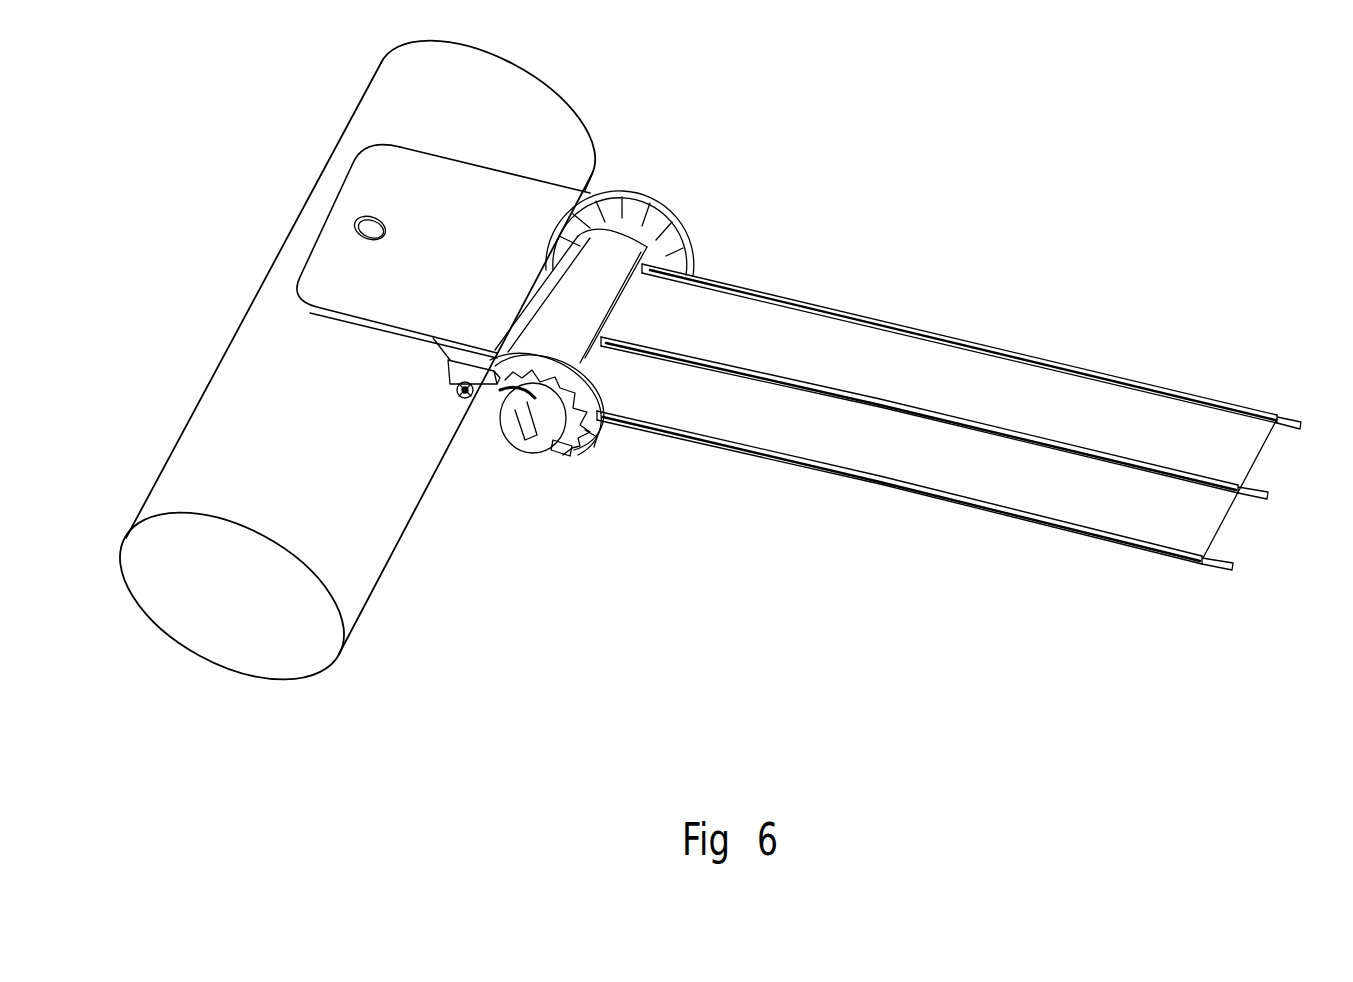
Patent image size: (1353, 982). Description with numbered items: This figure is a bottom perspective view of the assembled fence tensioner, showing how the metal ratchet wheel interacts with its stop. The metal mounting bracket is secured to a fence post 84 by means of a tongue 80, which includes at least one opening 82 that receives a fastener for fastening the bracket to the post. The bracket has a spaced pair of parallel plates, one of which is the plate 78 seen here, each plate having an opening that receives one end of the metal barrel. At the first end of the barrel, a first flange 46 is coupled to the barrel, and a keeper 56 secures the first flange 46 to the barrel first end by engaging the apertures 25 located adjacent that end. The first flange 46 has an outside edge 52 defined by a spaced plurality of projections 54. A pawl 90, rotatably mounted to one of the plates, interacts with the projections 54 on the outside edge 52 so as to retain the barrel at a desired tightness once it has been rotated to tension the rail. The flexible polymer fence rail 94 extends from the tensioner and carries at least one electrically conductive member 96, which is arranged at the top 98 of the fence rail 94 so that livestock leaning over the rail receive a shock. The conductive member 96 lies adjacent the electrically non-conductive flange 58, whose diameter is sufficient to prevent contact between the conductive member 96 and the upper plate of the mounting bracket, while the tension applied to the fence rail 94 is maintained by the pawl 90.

The fence post 84 is at (232, 412).
The tongue 80 is at (387, 282).
The opening 82 is at (368, 230).
The electrically non-conductive flange 58 is at (687, 253).
The top of the fence rail 98 is at (910, 330).
The flexible polymer fence rail 94 is at (950, 465).
The electrically conductive member 96 is at (1300, 418).
The first flange 46 is at (575, 445).
The outside edge 52 is at (578, 388).
The keeper 56 is at (532, 425).
The projections 54 is at (587, 430).
The plate 78 is at (597, 437).
The apertures 25 is at (507, 410).
The pawl 90 is at (455, 368).